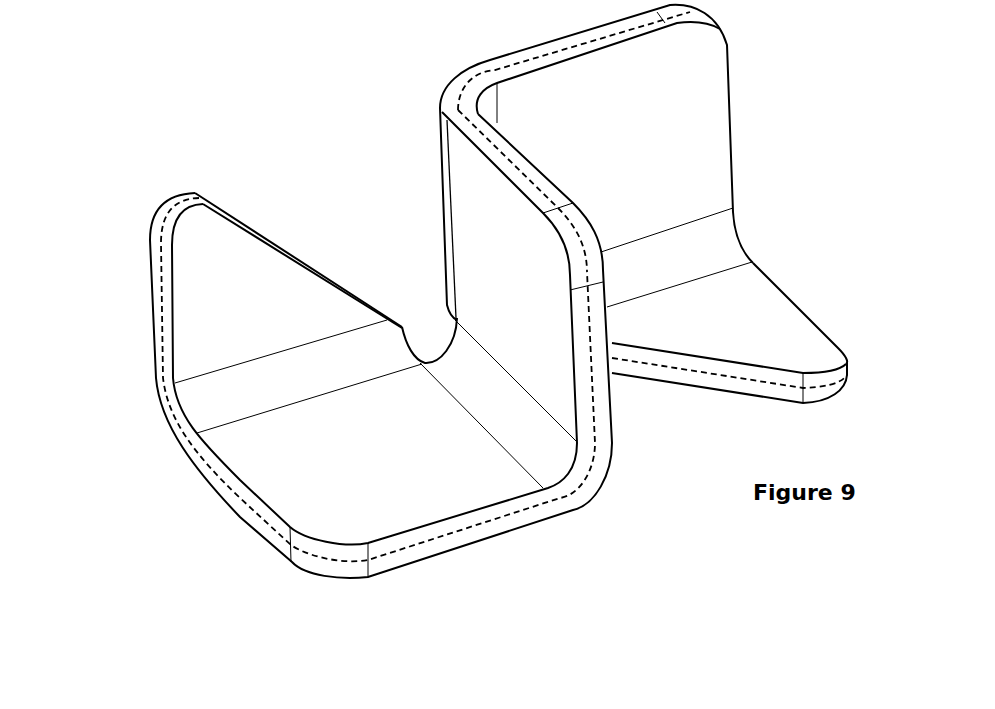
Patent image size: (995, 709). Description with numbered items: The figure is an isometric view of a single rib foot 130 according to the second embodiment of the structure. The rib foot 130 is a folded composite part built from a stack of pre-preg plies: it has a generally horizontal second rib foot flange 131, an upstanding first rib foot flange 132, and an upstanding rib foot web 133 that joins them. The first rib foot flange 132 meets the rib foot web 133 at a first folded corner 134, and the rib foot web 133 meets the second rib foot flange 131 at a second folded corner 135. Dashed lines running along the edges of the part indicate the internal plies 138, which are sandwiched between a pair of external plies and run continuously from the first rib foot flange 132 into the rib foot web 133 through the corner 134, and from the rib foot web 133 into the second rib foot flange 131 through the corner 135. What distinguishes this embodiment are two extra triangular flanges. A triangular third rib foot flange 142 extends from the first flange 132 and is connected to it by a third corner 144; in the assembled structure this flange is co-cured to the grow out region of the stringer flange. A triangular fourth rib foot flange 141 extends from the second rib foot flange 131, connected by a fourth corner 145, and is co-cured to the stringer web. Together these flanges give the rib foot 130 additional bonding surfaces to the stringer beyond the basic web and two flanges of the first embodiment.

The rib foot 130 is at (751, 152).
The second rib foot flange 131 is at (396, 466).
The first rib foot flange 132 is at (650, 158).
The rib foot web 133 is at (533, 280).
The first folded corner 134 is at (443, 168).
The second folded corner 135 is at (600, 475).
The internal plies 138 is at (160, 285).
The fourth rib foot flange 141 is at (266, 309).
The third rib foot flange 142 is at (780, 327).
The third corner 144 is at (713, 252).
The fourth corner 145 is at (202, 412).